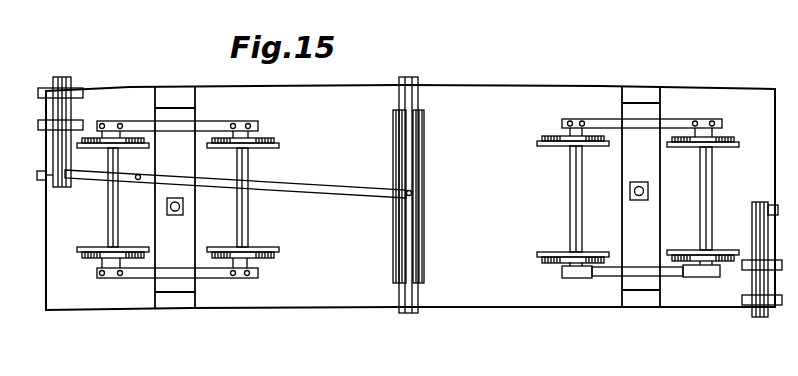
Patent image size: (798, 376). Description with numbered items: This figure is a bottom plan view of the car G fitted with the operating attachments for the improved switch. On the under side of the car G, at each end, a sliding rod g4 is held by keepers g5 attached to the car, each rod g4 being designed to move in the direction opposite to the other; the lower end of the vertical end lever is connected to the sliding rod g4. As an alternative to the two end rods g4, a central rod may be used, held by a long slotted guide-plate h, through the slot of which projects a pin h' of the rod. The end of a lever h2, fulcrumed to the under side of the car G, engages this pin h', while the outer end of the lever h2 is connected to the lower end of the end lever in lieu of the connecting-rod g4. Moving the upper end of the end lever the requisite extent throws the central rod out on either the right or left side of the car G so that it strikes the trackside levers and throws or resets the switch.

The car G is at (410, 197).
The sliding rod g4 is at (62, 78).
The keepers g5 is at (82, 93).
The slotted guide-plate h is at (420, 195).
The pin h' is at (436, 188).
The lever h2 is at (322, 193).